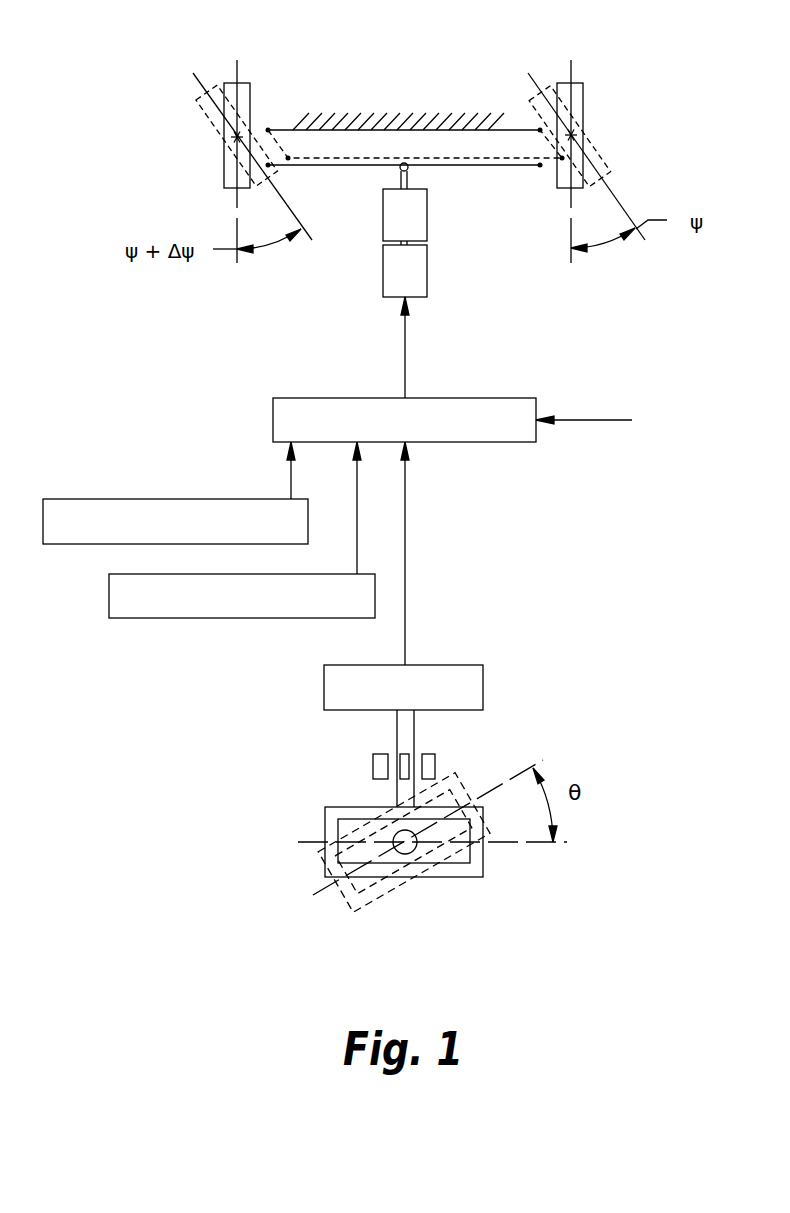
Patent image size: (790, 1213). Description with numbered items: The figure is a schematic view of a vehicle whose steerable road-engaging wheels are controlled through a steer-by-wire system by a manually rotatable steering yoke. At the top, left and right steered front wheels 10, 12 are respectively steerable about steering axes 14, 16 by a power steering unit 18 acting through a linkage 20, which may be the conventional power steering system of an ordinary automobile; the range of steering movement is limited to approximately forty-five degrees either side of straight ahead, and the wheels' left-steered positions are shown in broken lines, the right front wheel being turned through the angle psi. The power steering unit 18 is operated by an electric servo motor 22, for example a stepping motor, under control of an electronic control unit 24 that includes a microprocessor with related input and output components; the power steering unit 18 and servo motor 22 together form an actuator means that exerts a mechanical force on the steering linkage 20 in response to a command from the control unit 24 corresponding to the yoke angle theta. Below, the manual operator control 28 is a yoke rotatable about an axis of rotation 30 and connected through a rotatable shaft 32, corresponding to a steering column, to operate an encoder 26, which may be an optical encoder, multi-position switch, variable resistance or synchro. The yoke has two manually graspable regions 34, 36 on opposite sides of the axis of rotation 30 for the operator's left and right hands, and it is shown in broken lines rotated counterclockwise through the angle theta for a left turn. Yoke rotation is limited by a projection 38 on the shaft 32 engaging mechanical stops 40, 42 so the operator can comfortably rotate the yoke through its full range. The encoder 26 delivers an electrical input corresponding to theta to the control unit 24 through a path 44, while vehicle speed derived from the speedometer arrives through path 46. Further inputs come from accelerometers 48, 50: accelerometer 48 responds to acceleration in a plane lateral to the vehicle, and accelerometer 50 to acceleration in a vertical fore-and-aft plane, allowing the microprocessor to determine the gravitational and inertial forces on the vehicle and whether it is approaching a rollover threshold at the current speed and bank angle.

The left steered front wheel 10 is at (250, 93).
The right steered front wheel 12 is at (583, 93).
The steering axis 14 is at (232, 145).
The steering axis 16 is at (577, 128).
The power steering unit 18 is at (427, 229).
The linkage 20 is at (478, 176).
The electric servo motor 22 is at (427, 276).
The electronic control unit 24 is at (490, 442).
The encoder 26 is at (483, 687).
The manual operator control 28 is at (411, 862).
The axis of rotation 30 is at (406, 848).
The rotatable shaft 32 is at (397, 727).
The manually graspable region 34 is at (325, 815).
The manually graspable region 36 is at (483, 862).
The projection 38 is at (408, 762).
The mechanical stop 40 is at (372, 767).
The mechanical stop 42 is at (435, 765).
The path 44 is at (405, 563).
The path 46 is at (590, 420).
The accelerometer 48 is at (75, 545).
The accelerometer 50 is at (142, 618).